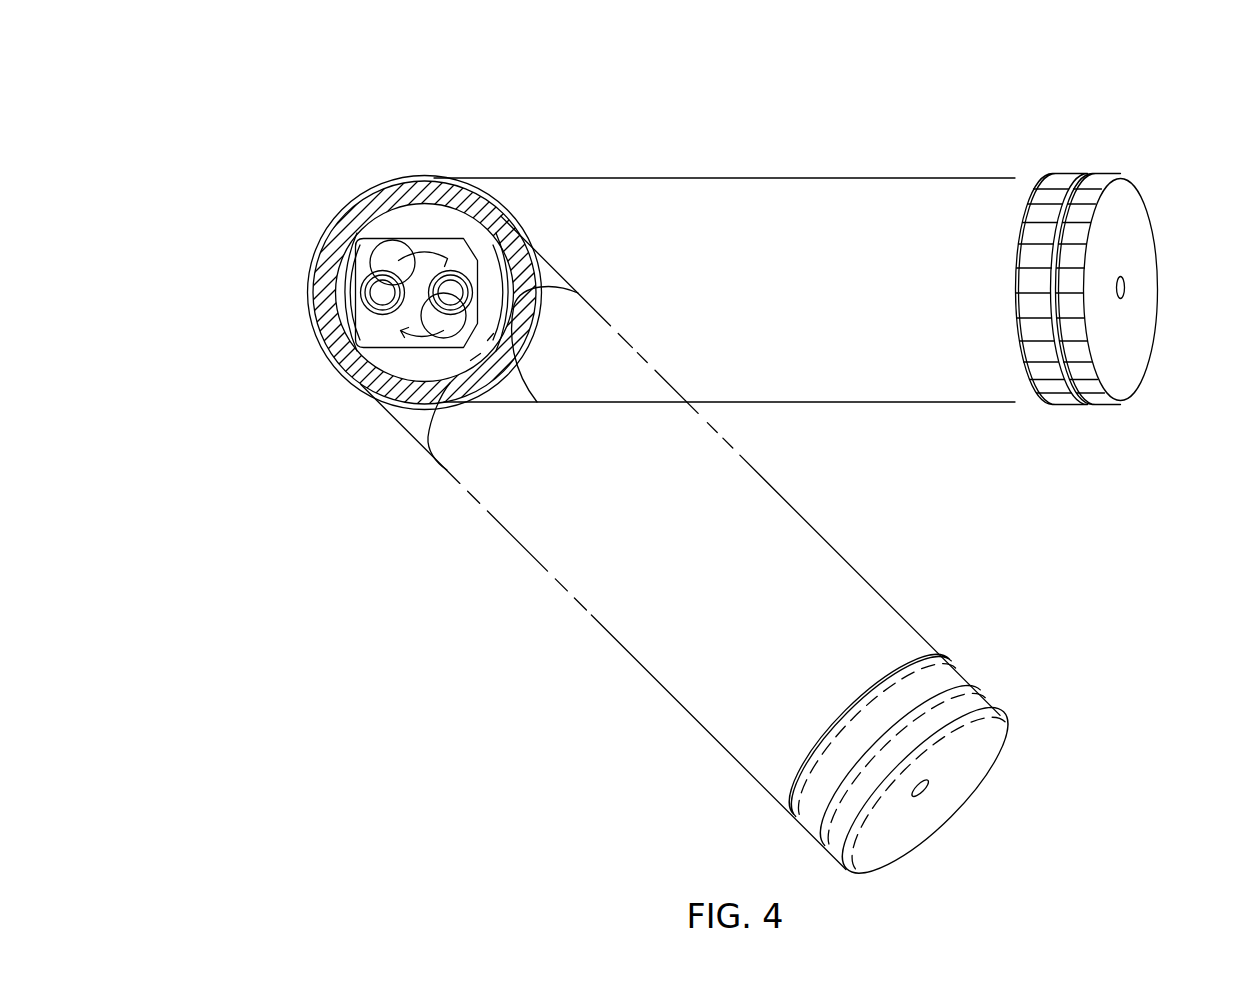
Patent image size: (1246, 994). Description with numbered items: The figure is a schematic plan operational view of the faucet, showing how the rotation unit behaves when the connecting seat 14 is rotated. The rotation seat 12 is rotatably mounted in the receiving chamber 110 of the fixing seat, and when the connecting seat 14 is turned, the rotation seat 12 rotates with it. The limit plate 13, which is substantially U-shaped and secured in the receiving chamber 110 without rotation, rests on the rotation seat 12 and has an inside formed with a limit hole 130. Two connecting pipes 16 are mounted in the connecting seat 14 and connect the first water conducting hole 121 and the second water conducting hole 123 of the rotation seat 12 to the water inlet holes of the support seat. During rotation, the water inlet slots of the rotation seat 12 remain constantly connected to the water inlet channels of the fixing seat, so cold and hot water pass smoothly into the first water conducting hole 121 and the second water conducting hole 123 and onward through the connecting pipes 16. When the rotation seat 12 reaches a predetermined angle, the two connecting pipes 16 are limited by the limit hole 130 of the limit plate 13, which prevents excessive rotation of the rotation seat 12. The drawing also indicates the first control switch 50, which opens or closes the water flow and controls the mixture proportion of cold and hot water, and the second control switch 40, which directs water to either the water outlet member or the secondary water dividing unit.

The rotation seat 12 is at (367, 327).
The limit plate 13 is at (413, 217).
The connecting seat 14 is at (735, 178).
The connecting pipes 16 is at (358, 200).
The second control switch 40 is at (1067, 173).
The first control switch 50 is at (1124, 172).
The receiving chamber 110 is at (358, 262).
The first water conducting hole 121 is at (362, 292).
The second water conducting hole 123 is at (477, 243).
The limit hole 130 is at (430, 243).